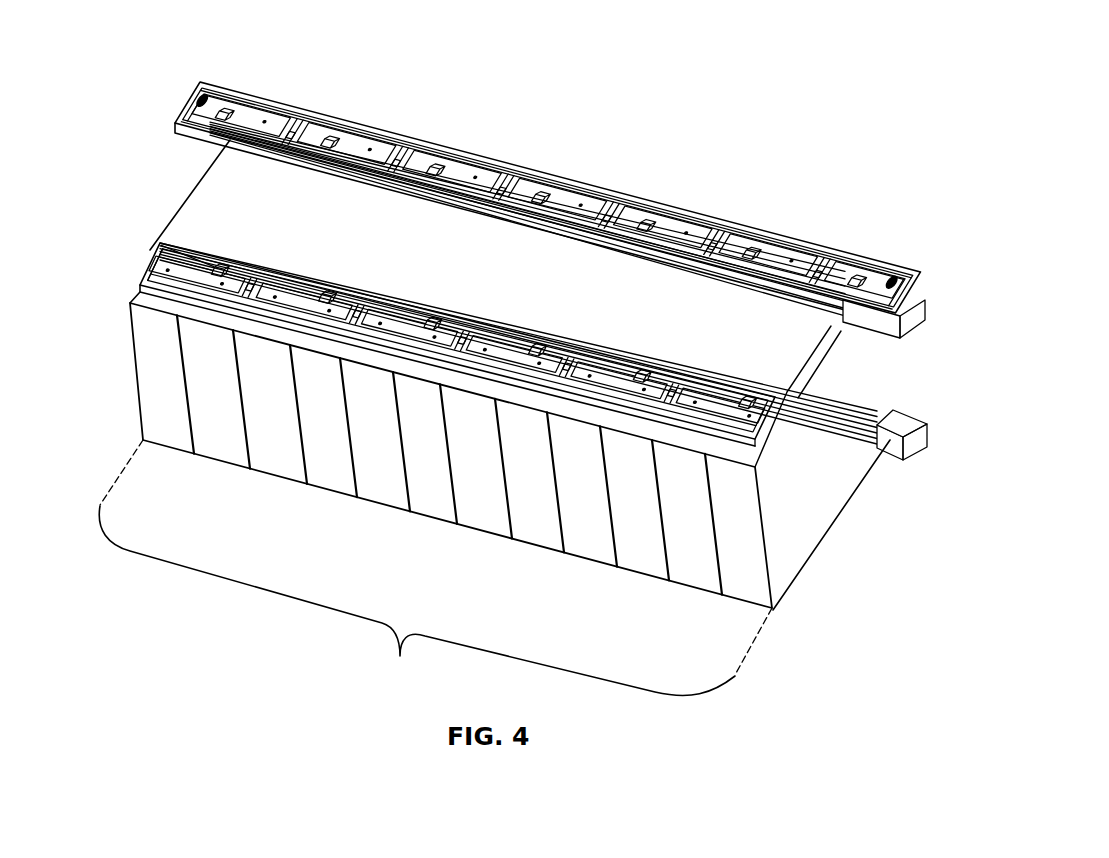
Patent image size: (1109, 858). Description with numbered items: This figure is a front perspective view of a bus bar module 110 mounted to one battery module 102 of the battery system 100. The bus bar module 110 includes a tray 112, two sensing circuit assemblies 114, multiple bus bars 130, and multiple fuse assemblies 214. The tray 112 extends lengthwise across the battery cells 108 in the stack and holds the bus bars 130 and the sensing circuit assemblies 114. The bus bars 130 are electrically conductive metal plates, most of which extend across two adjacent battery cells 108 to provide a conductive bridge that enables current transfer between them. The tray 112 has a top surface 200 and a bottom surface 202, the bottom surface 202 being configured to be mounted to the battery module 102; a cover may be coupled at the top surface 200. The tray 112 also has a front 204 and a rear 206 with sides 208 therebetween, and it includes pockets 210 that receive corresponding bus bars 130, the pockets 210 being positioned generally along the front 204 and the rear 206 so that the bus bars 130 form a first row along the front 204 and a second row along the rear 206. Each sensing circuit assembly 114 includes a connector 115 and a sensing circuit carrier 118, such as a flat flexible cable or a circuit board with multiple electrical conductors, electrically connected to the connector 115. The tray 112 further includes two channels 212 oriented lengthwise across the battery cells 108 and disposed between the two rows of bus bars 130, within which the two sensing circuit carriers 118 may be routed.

The battery system 100 is at (368, 33).
The battery module 102 is at (435, 567).
The battery cells 108 is at (702, 580).
The bus bar module 110 is at (720, 220).
The tray 112 is at (612, 205).
The sensing circuit assembly 114 is at (907, 340).
The connector 115 is at (893, 316).
The sensing circuit carrier 118 is at (805, 300).
The bus bars 130 is at (247, 110).
The top surface 200 is at (203, 207).
The bottom surface 202 is at (155, 297).
The front 204 is at (316, 328).
The rear 206 is at (508, 168).
The sides 208 is at (206, 165).
The pockets 210 is at (818, 256).
The channels 212 is at (192, 254).
The fuse assemblies 214 is at (533, 188).